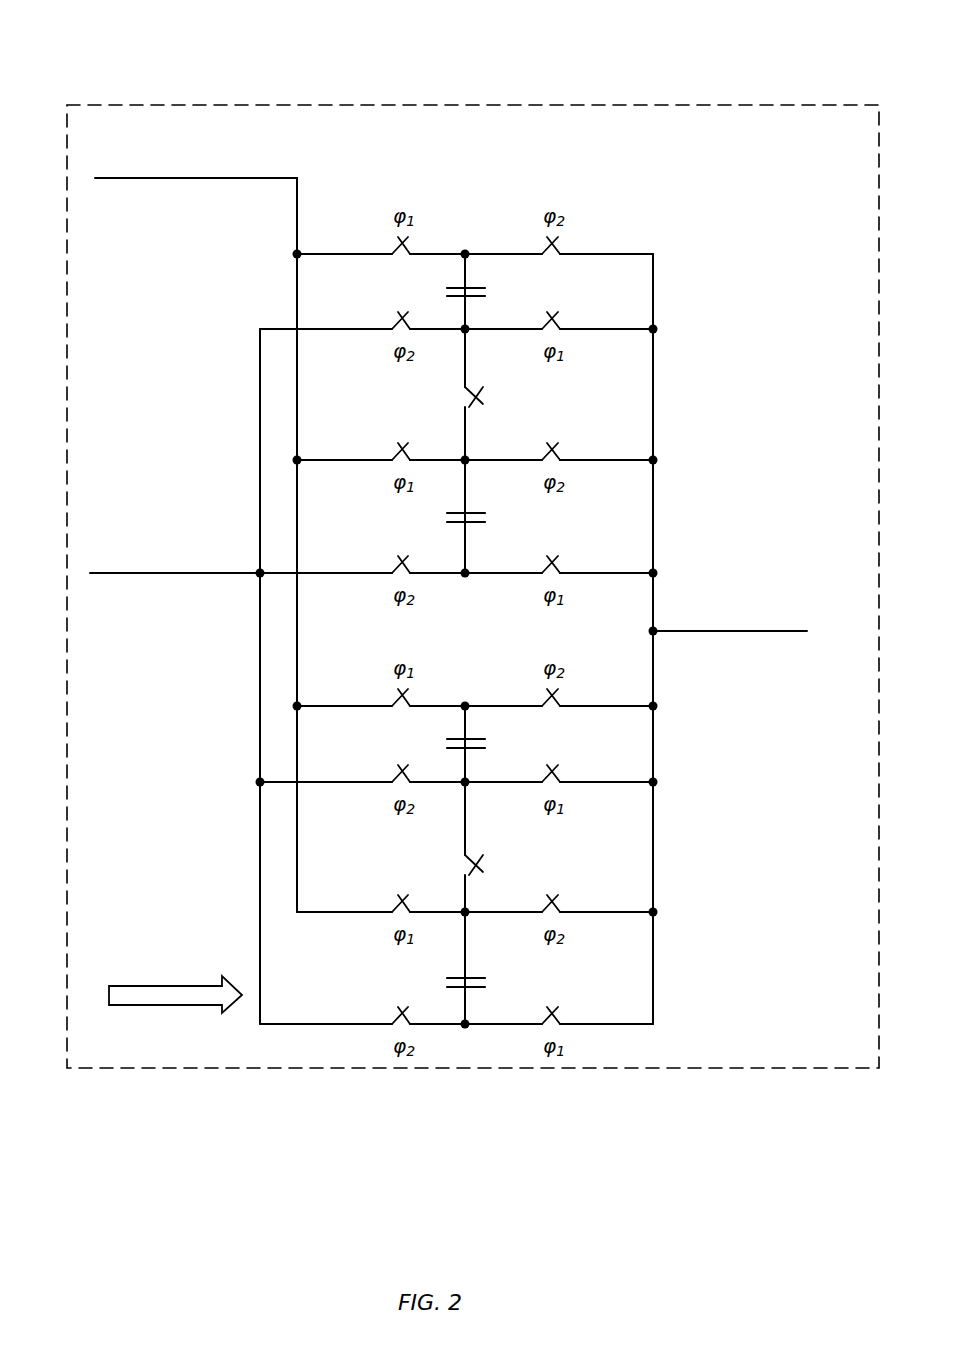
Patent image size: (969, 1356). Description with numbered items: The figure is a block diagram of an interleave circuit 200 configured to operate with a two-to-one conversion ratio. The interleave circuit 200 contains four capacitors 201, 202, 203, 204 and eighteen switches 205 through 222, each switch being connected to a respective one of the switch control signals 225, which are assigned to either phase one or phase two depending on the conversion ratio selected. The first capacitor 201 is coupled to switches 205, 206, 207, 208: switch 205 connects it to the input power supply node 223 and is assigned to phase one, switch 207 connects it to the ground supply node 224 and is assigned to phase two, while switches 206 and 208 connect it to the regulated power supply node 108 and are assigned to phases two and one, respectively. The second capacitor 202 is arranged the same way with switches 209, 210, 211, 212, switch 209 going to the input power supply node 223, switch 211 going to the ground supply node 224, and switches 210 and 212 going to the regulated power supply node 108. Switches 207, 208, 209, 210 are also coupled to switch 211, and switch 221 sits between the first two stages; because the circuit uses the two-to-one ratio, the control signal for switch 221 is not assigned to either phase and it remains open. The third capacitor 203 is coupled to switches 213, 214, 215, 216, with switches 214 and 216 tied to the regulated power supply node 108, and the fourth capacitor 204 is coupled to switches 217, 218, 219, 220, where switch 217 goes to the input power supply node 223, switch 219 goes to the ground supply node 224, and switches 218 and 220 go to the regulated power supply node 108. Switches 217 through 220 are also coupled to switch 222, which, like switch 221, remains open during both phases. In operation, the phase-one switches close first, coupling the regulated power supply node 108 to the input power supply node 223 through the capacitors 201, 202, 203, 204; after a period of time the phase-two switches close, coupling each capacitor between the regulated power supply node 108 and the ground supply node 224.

The interleave circuit 200 is at (458, 103).
The regulated power supply node 108 is at (778, 630).
The input power supply node 223 is at (196, 518).
The ground supply node 224 is at (241, 676).
The switch control signals 225 is at (185, 984).
The capacitor 201 is at (478, 280).
The capacitor 202 is at (478, 530).
The capacitor 203 is at (478, 730).
The capacitor 204 is at (478, 995).
The switch 205 is at (390, 248).
The switch 206 is at (565, 248).
The switch 207 is at (390, 323).
The switch 208 is at (565, 323).
The switch 209 is at (390, 454).
The switch 210 is at (565, 454).
The switch 211 is at (390, 567).
The switch 212 is at (565, 567).
The switch 213 is at (390, 700).
The switch 214 is at (565, 700).
The switch 215 is at (390, 776).
The switch 216 is at (565, 776).
The switch 217 is at (390, 906).
The switch 218 is at (565, 906).
The switch 219 is at (390, 1018).
The switch 220 is at (565, 1018).
The switch 221 is at (461, 401).
The switch 222 is at (478, 852).